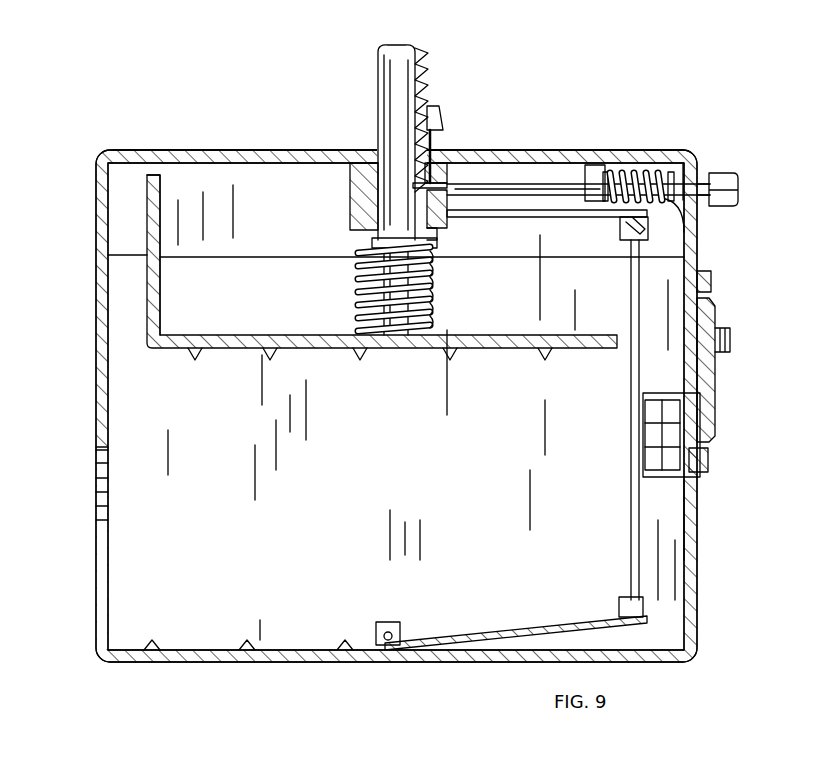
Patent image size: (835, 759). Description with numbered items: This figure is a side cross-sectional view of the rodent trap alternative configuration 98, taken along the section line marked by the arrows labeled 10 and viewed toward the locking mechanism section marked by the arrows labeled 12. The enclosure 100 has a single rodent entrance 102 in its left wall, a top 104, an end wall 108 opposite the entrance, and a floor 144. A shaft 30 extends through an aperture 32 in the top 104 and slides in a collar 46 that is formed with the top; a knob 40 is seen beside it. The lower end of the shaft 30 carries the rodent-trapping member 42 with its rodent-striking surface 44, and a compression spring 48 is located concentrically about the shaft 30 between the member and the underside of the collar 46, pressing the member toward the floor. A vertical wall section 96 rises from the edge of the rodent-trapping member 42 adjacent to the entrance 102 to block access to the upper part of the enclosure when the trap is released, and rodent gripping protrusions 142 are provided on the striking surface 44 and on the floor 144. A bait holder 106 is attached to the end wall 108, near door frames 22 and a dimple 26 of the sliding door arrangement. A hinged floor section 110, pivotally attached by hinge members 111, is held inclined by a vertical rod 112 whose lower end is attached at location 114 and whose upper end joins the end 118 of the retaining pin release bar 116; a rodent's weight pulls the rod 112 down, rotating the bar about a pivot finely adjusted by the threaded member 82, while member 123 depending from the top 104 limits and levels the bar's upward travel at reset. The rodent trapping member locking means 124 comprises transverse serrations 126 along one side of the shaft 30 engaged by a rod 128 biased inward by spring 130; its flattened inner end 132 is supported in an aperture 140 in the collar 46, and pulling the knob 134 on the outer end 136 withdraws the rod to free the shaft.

The rodent trap 10 is at (380, 11).
The enclosure 12 is at (330, 180).
The door frames 22 is at (711, 284).
The dimple 26 is at (715, 390).
The shaft 30 is at (388, 100).
The aperture 32 is at (372, 158).
The knob 40 is at (434, 122).
The rodent-trapping member 42 is at (216, 338).
The rodent-striking surface 44 is at (255, 348).
The collar 46 is at (352, 200).
The compression spring 48 is at (434, 298).
The threaded member 82 is at (433, 143).
The vertical wall section 96 is at (150, 218).
The rodent trap alternative configuration 98 is at (597, 101).
The enclosure 100 is at (97, 320).
The rodent entrance 102 is at (92, 494).
The top 104 is at (190, 160).
The bait holder 106 is at (672, 477).
The end wall 108 is at (690, 510).
The hinged floor section 110 is at (483, 632).
The hinge members 111 is at (400, 630).
The vertical rod 112 is at (631, 283).
The location 114 is at (618, 610).
The retaining pin release bar 116 is at (572, 217).
The end 118 is at (622, 228).
The member 123 is at (596, 170).
The rodent trapping member locking means 124 is at (664, 168).
The transverse serrations 126 is at (423, 70).
The rod 128 is at (536, 188).
The spring 130 is at (625, 178).
The inner end 132 is at (455, 170).
The knob 134 is at (724, 206).
The outer end 136 is at (703, 190).
The aperture 140 is at (447, 226).
The rodent gripping protrusions 142 is at (360, 352).
The floor 144 is at (198, 638).